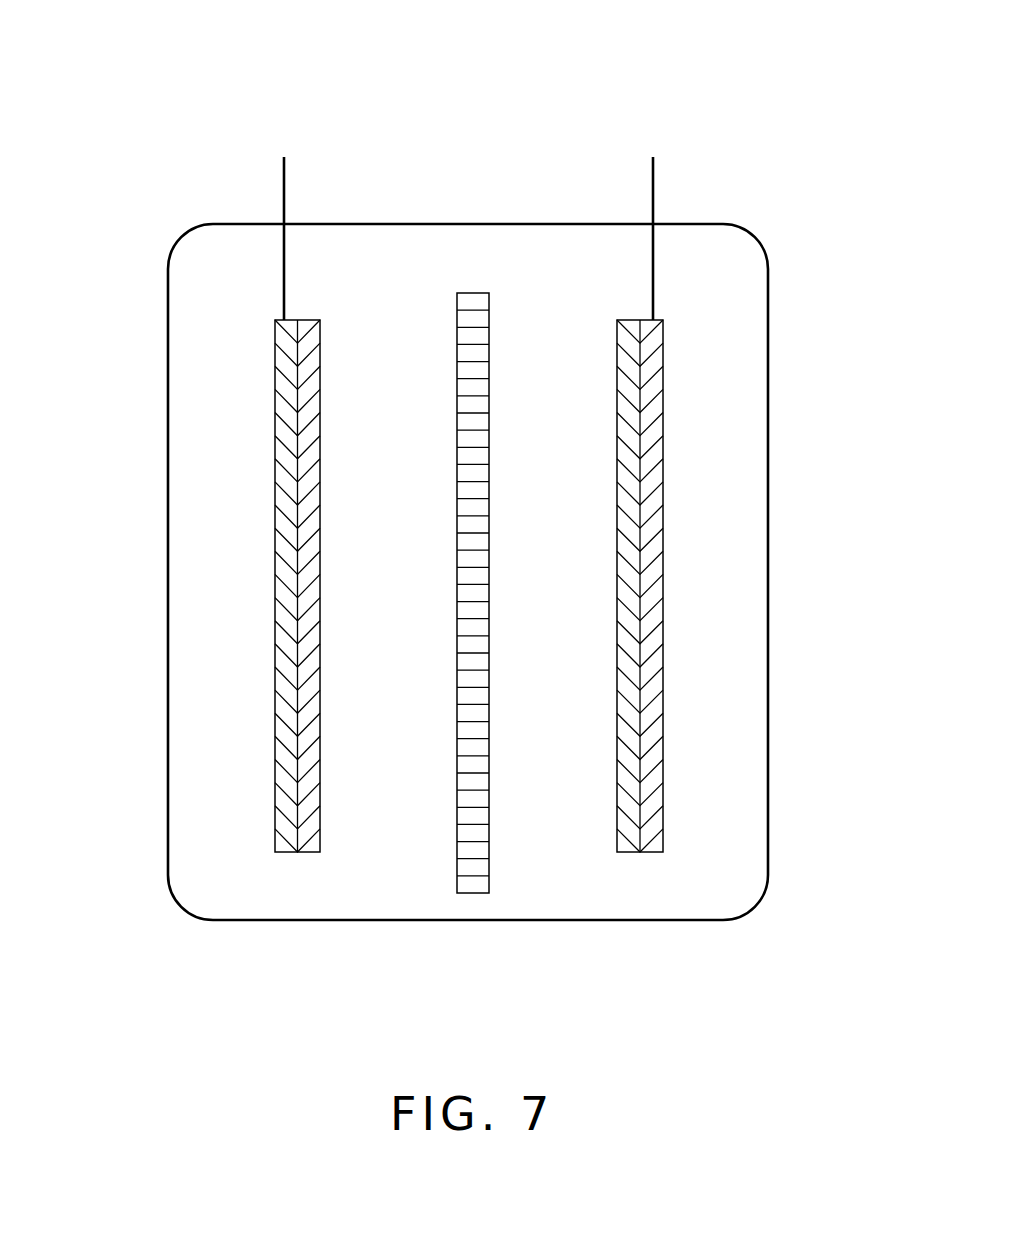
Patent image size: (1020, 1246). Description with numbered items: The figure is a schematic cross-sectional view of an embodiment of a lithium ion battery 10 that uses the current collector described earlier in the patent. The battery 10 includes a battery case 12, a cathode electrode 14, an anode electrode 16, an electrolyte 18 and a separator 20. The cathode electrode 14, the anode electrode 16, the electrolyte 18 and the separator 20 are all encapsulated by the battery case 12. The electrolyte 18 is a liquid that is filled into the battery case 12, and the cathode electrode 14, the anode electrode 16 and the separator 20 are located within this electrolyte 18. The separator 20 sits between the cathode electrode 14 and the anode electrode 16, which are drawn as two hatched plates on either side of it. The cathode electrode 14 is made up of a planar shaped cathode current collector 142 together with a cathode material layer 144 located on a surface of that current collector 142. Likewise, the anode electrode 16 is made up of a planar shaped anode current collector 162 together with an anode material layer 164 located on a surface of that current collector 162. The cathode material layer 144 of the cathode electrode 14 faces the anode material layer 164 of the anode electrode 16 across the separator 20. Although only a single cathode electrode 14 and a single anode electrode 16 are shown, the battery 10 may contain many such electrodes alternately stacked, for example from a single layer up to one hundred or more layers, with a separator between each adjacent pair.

The lithium ion battery 10 is at (416, 92).
The battery case 12 is at (768, 441).
The cathode electrode 14 is at (176, 504).
The cathode current collector 142 is at (275, 385).
The cathode material layer 144 is at (310, 508).
The anode electrode 16 is at (757, 505).
The anode current collector 162 is at (650, 705).
The anode material layer 164 is at (632, 790).
The electrolyte 18 is at (375, 877).
The separator 20 is at (490, 803).